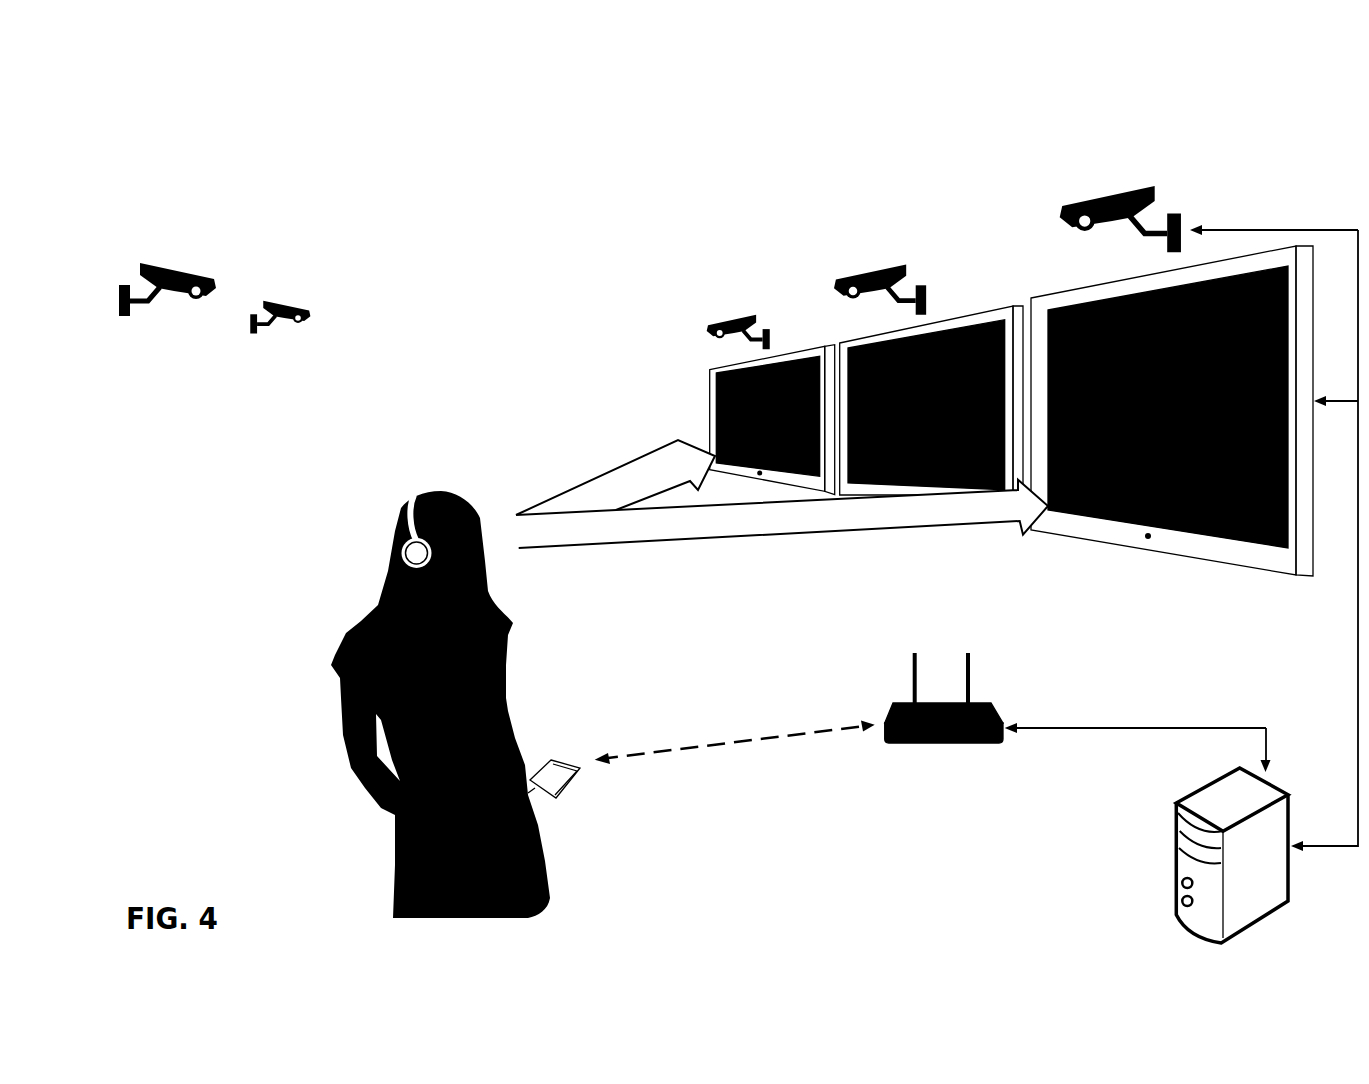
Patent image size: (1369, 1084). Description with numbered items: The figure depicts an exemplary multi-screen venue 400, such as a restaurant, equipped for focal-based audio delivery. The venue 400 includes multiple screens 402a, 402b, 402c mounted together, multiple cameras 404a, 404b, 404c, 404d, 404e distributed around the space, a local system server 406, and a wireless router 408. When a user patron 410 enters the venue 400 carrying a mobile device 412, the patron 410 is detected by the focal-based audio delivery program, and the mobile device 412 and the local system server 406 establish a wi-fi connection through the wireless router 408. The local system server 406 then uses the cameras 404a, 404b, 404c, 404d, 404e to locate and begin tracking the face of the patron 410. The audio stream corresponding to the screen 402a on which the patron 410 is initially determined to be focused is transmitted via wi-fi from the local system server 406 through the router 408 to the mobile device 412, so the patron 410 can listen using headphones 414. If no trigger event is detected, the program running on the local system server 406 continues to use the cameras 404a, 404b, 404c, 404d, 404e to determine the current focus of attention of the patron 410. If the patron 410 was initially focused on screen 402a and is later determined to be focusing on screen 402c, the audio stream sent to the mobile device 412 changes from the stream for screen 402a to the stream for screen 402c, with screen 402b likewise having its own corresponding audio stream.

The multi-screen venue 400 is at (162, 153).
The screen 402a is at (783, 343).
The screen 402b is at (967, 304).
The screen 402c is at (1290, 240).
The camera 404a is at (733, 308).
The camera 404b is at (877, 260).
The camera 404c is at (1122, 178).
The camera 404d is at (273, 293).
The camera 404e is at (162, 258).
The local system server 406 is at (1166, 895).
The wireless router 408 is at (942, 735).
The patron 410 is at (328, 644).
The mobile device 412 is at (545, 752).
The headphones 414 is at (403, 490).